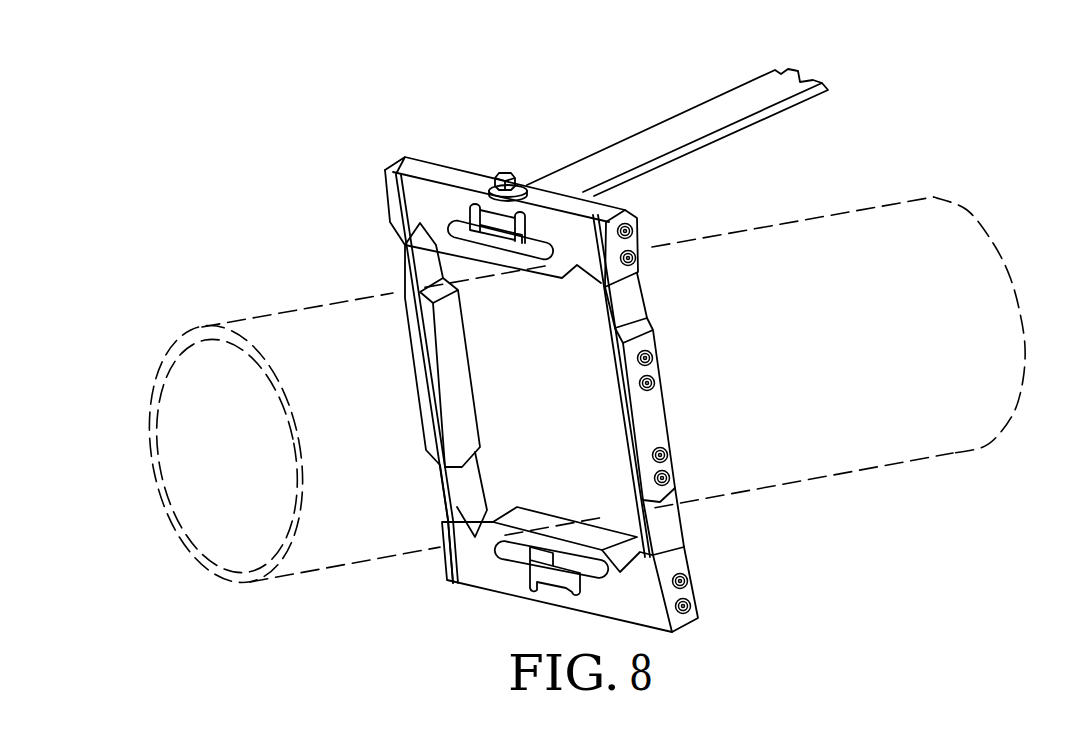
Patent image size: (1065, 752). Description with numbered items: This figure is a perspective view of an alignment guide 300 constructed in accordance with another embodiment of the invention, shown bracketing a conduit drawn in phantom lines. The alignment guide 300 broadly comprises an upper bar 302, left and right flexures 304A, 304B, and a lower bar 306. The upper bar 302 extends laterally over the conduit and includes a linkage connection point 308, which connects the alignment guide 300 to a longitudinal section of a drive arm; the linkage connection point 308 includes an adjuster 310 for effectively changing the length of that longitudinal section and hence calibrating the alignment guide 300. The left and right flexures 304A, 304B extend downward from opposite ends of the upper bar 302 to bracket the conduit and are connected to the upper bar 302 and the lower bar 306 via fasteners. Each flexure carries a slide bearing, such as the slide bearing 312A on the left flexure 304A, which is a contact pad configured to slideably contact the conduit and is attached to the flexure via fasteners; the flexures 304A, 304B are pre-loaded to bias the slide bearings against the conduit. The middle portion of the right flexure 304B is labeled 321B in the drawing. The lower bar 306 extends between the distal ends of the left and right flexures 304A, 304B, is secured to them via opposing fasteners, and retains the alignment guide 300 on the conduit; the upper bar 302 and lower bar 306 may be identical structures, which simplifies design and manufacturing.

The alignment guide 300 is at (368, 101).
The upper bar 302 is at (448, 153).
The left flexure 304A is at (684, 525).
The right flexure 304B is at (399, 255).
The lower bar 306 is at (506, 604).
The linkage connection point 308 is at (521, 148).
The adjuster 310 is at (517, 166).
The slide bearing 312A is at (597, 387).
The middle section of second side plate 321B is at (455, 346).